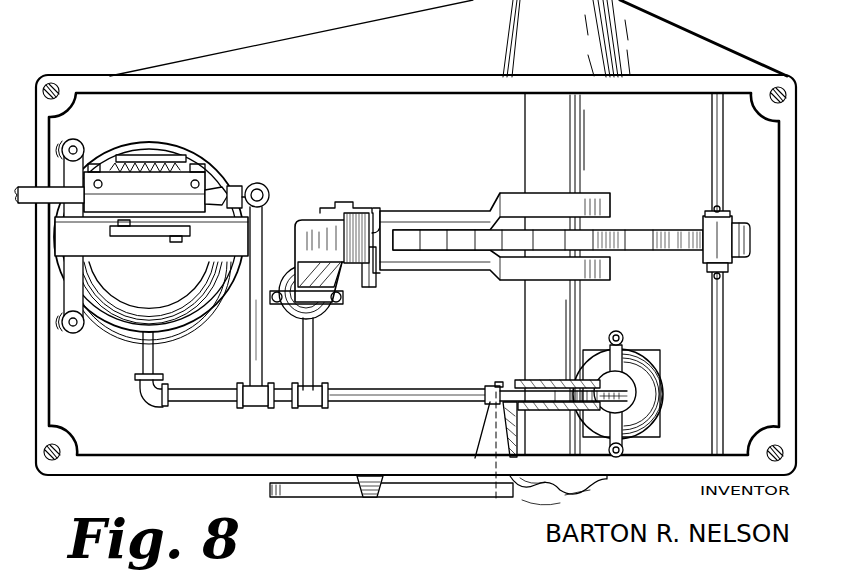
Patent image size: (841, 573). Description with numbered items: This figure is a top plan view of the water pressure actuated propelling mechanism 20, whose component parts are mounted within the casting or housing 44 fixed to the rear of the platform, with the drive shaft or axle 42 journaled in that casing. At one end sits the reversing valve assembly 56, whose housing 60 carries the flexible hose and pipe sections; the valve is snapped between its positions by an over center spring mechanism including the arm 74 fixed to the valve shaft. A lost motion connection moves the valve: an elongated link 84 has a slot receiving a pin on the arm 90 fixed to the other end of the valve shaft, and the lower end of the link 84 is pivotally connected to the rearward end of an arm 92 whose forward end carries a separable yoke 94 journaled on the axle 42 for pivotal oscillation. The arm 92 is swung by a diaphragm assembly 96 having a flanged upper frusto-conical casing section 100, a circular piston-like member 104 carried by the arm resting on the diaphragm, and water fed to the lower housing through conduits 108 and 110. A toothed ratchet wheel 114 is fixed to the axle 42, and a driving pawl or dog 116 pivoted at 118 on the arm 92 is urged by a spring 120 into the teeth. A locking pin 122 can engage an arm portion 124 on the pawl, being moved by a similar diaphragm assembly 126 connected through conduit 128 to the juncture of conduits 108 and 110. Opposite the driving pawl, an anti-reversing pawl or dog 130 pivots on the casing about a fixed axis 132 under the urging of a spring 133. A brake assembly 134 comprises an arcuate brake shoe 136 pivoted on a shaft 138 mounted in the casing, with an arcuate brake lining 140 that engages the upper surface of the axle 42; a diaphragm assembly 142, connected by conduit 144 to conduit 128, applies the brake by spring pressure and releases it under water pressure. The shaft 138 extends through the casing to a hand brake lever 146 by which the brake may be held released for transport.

The propelling mechanism 20 is at (253, 40).
The drive shaft or axle 42 is at (578, 137).
The casting or housing 44 is at (140, 82).
The reversing valve assembly 56 is at (210, 158).
The housing 60 is at (110, 172).
The arm 74 is at (140, 158).
The elongated link 84 is at (132, 243).
The arm 90 is at (163, 237).
The arm 92 is at (275, 230).
The separable yoke 94 is at (612, 263).
The diaphragm assembly 96 is at (125, 337).
The flanged upper frusto-conical casing section 100 is at (200, 324).
The circular piston-like member 104 is at (190, 300).
The conduit 108 is at (262, 328).
The conduit 110 is at (155, 368).
The toothed ratchet wheel 114 is at (470, 193).
The driving pawl or dog 116 is at (383, 243).
The pivot 118 is at (345, 200).
The spring 120 is at (364, 273).
The locking pin 122 is at (328, 316).
The arm portion 124 is at (320, 274).
The diaphragm assembly 126 is at (272, 258).
The conduit 128 is at (311, 356).
The anti-reversing pawl or dog 130 is at (750, 258).
The fixed axis 132 is at (716, 310).
The spring 133 is at (706, 268).
The brake assembly 134 is at (511, 372).
The arcuate brake shoe 136 is at (552, 395).
The shaft 138 is at (494, 441).
The arcuate brake lining 140 is at (542, 410).
The diaphragm assembly 142 is at (655, 380).
The conduit 144 is at (387, 395).
The hand brake lever 146 is at (347, 490).